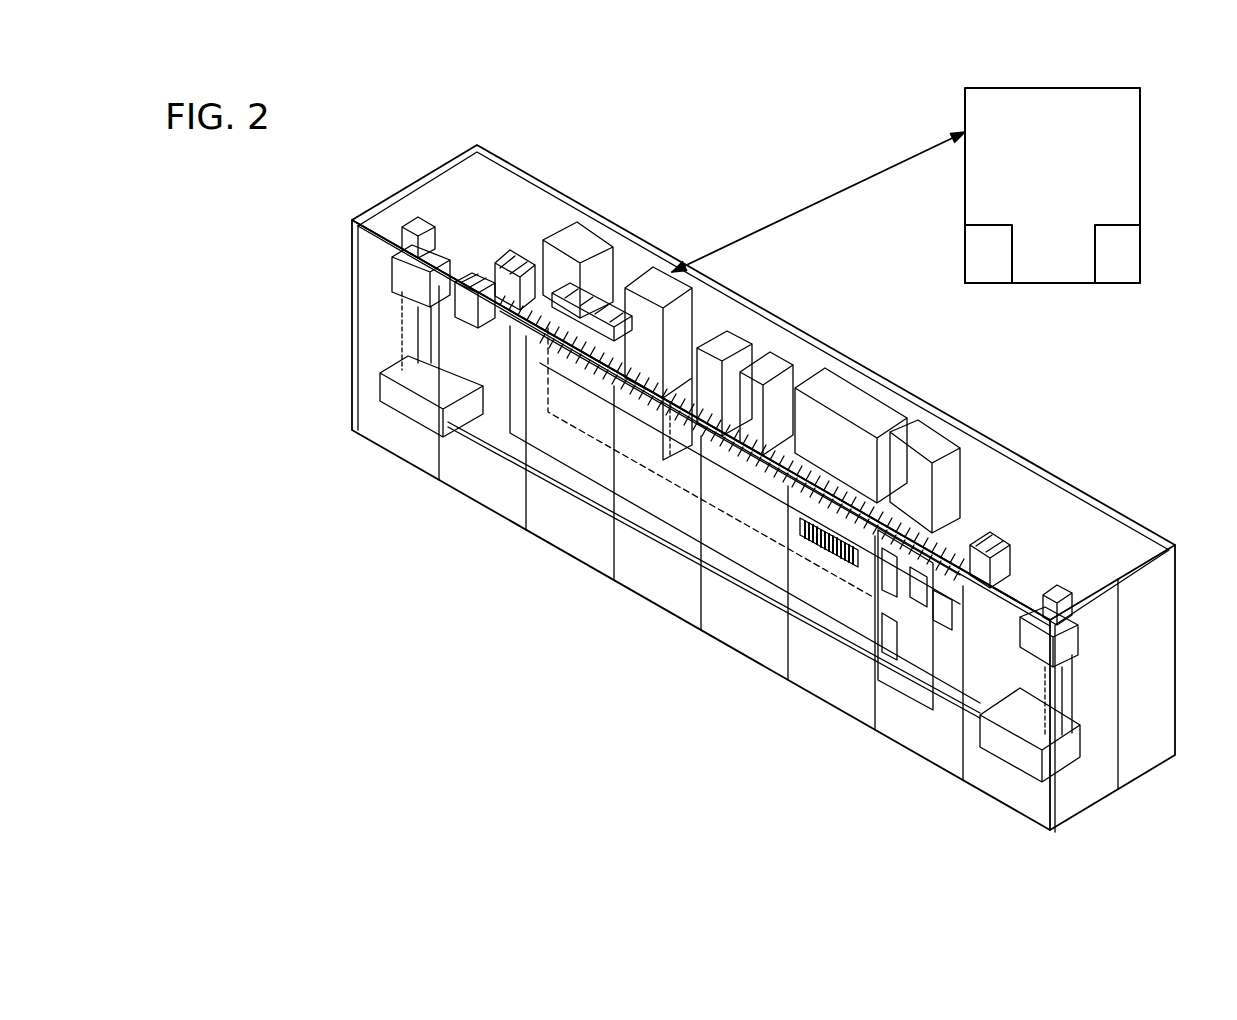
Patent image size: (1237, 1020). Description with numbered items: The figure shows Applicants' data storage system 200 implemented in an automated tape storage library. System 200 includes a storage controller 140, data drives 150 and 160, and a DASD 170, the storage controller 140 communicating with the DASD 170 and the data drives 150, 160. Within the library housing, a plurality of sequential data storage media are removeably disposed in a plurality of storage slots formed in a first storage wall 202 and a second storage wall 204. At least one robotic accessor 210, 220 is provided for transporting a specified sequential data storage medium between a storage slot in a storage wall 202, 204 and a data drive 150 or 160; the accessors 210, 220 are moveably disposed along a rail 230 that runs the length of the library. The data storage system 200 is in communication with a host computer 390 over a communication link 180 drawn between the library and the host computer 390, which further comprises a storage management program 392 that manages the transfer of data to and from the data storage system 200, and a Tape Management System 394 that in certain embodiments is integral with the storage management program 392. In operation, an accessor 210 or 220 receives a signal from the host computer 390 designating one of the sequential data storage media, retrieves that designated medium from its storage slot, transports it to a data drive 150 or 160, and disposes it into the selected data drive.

The storage controller 140 is at (657, 270).
The data storage drive 150 is at (738, 332).
The data storage drive 160 is at (784, 352).
The DASD 170 is at (583, 243).
The communication link 180 is at (792, 208).
The data storage system 200 is at (720, 688).
The first storage wall 202 is at (620, 290).
The second storage wall 204 is at (553, 447).
The robotic accessor 210 is at (405, 268).
The robotic accessor 220 is at (1070, 643).
The rail 230 is at (650, 543).
The host computer 390 is at (1072, 204).
The storage management program 392 is at (972, 264).
The Tape Management System 394 is at (1101, 264).